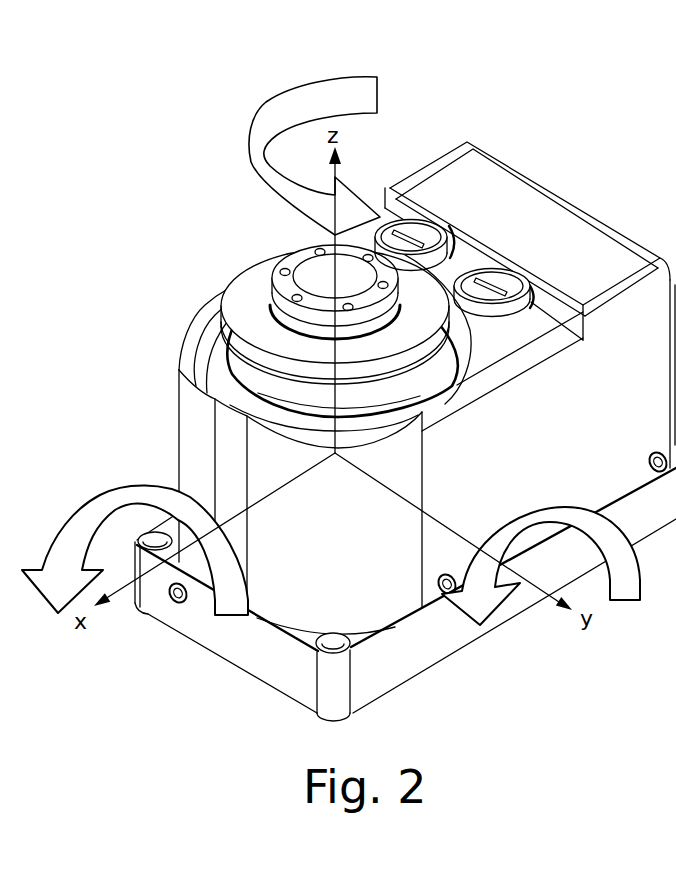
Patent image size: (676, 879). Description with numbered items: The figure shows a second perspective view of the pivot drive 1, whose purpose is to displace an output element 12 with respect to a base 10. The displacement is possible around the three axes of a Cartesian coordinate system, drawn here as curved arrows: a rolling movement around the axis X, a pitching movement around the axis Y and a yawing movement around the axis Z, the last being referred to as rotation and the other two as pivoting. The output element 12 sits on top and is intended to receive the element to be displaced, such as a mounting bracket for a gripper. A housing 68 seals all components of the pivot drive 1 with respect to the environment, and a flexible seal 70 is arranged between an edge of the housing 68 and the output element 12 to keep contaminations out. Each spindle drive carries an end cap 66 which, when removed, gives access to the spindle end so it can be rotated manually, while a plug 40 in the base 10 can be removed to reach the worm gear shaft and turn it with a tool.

The pivot drive 1 is at (620, 108).
The base 10 is at (393, 662).
The output element 12 is at (302, 257).
The plug 40 is at (187, 601).
The end cap 66 is at (420, 230).
The housing 68 is at (520, 198).
The flexible seal 70 is at (232, 348).